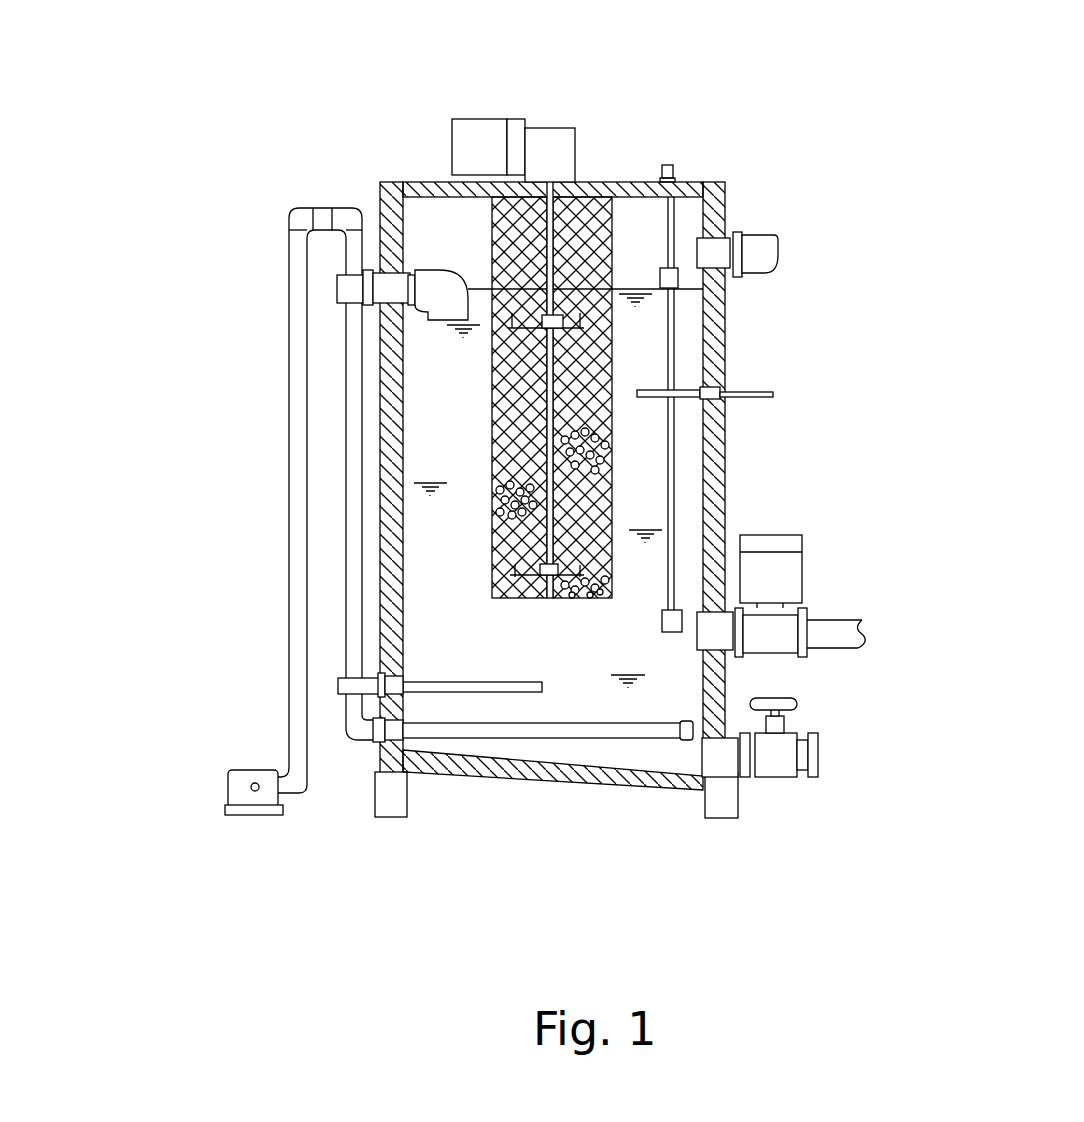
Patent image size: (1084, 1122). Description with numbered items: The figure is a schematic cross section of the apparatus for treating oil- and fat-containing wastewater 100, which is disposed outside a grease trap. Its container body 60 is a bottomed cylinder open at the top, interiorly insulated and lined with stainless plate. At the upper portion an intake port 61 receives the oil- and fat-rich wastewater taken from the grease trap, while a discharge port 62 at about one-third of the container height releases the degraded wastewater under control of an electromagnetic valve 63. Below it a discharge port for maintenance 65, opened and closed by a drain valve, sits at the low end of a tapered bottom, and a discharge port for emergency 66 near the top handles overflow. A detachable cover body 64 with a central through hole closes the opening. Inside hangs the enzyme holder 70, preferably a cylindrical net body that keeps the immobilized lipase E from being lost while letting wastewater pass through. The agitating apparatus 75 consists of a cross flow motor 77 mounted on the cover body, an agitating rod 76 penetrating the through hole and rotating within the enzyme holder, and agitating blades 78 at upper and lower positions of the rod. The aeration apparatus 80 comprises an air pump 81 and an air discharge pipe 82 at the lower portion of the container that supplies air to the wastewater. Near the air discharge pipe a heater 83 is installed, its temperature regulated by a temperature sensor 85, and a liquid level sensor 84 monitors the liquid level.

The apparatus for treating oil- and fat-containing wastewater 100 is at (576, 78).
The container body 60 is at (718, 497).
The intake port 61 is at (347, 290).
The discharge port 62 is at (855, 636).
The electromagnetic valve 63 is at (783, 567).
The cover body 64 is at (628, 182).
The discharge port for maintenance 65 is at (802, 758).
The discharge port for emergency 66 is at (762, 252).
The enzyme holder 70 is at (612, 342).
The agitating apparatus 75 is at (612, 447).
The agitating rod 76 is at (545, 412).
The cross flow motor 77 is at (452, 138).
The agitating blade 78 is at (492, 338).
The aeration apparatus 80 is at (290, 735).
The air pump 81 is at (228, 790).
The air discharge pipe 82 is at (506, 730).
The heater 83 is at (338, 688).
The liquid level sensor 84 is at (660, 293).
The temperature sensor 85 is at (773, 395).
The immobilized lipase E is at (495, 510).